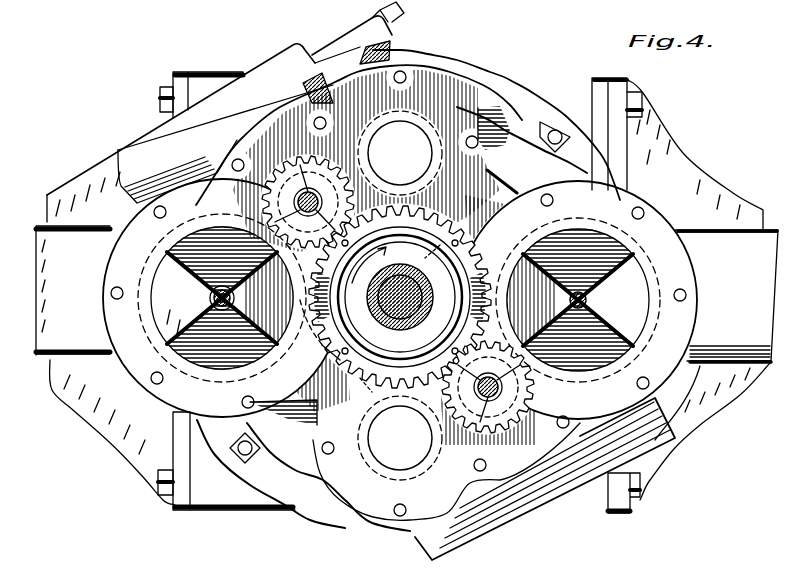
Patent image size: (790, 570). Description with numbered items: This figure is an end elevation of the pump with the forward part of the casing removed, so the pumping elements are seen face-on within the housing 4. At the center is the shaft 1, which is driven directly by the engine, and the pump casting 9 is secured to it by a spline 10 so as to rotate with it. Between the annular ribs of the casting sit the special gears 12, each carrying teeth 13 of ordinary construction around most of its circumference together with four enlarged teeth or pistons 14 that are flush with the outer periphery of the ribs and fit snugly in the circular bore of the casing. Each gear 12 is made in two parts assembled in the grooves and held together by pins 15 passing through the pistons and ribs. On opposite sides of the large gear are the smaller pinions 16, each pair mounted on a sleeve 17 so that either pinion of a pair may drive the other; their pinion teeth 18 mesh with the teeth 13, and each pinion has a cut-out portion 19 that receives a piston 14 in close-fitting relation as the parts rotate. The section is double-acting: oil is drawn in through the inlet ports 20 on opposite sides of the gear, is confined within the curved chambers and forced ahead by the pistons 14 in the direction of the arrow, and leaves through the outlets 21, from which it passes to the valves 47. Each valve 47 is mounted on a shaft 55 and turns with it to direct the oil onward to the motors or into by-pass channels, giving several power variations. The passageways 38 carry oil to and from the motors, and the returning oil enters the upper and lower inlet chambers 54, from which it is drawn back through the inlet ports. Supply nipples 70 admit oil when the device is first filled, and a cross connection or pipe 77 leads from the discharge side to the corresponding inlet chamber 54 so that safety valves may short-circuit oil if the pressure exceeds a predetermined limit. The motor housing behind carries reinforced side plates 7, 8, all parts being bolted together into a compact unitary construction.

The shaft 1 is at (422, 297).
The housing 4 is at (487, 290).
The side plate 7 is at (176, 447).
The side plate 8 is at (625, 515).
The casting 9 is at (409, 282).
The spline 10 is at (410, 275).
The gear 12 is at (322, 345).
The teeth 13 is at (458, 240).
The piston 14 is at (438, 252).
The pin 15 is at (345, 380).
The pinion 16 is at (398, 311).
The sleeve 17 is at (302, 150).
The pinion teeth 18 is at (318, 185).
The cut-out portion 19 is at (300, 195).
The inlet port 20 is at (400, 295).
The outlet 21 is at (222, 298).
The passageway 38 is at (208, 72).
The valve 47 is at (208, 296).
The inlet chamber 54 is at (405, 133).
The shaft 55 is at (400, 299).
The supply nipple 70 is at (388, 24).
The cross connection 77 is at (155, 148).